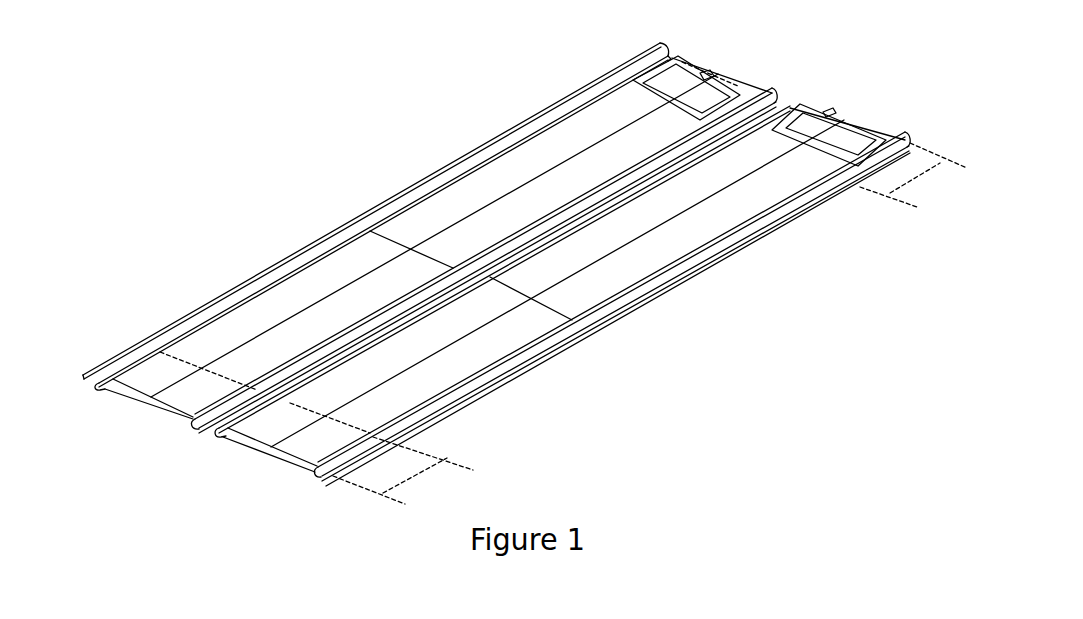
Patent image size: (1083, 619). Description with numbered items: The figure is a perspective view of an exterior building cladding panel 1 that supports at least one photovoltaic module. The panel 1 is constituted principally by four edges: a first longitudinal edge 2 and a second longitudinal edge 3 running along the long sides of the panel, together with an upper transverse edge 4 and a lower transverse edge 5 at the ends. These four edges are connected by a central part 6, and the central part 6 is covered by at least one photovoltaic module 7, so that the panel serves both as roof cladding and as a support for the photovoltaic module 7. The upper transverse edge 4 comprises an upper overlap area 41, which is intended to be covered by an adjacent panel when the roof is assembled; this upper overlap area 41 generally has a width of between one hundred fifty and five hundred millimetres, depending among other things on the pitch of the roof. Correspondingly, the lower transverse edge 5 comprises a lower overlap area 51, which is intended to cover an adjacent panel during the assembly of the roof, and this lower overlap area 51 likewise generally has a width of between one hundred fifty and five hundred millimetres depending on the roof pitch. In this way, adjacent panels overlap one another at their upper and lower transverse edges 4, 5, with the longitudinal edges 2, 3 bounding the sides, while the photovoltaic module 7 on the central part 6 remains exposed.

The panel 1 is at (266, 170).
The first longitudinal edge 2 is at (159, 332).
The second longitudinal edge 3 is at (477, 397).
The upper transverse edge 4 is at (817, 110).
The upper overlap area 41 is at (913, 176).
The lower transverse edge 5 is at (240, 445).
The lower overlap area 51 is at (612, 319).
The central part 6 is at (508, 172).
The photovoltaic module 7 is at (247, 318).